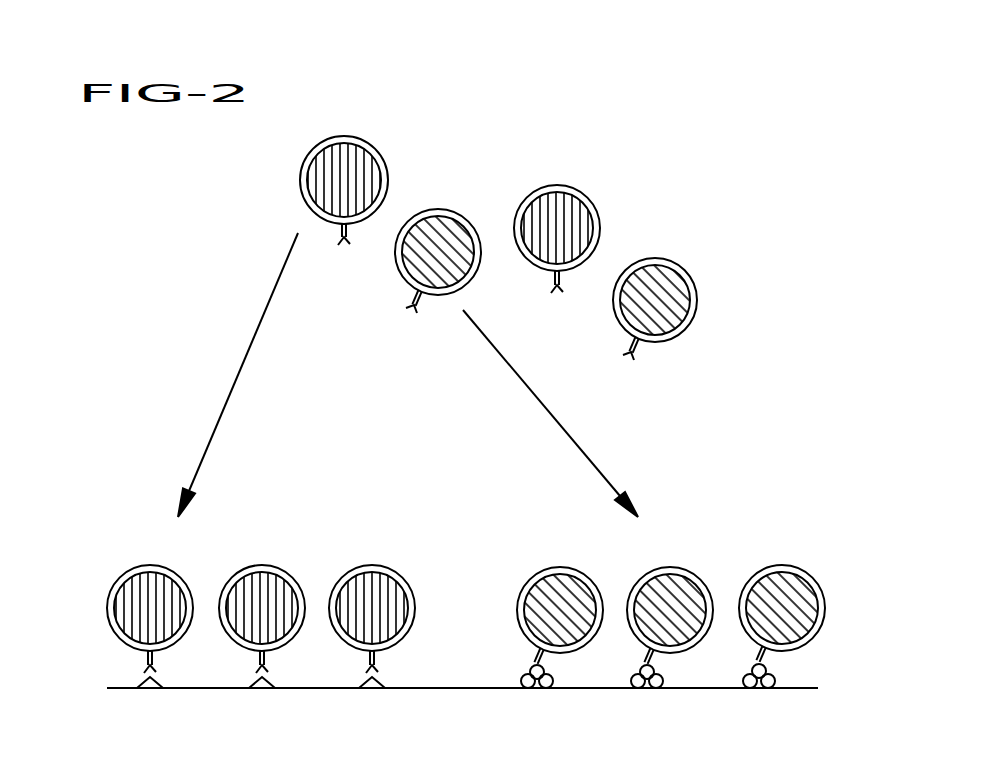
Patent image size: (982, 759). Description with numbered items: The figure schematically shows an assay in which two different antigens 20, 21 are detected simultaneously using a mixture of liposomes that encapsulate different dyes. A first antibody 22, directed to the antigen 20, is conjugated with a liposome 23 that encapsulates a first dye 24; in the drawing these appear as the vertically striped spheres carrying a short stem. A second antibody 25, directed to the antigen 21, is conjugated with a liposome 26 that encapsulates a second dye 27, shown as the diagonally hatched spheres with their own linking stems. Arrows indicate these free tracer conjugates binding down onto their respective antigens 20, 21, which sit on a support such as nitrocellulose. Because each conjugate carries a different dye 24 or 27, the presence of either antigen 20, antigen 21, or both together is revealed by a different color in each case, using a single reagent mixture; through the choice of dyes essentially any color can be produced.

The first antigen 20 is at (163, 688).
The second antigen 21 is at (552, 688).
The first antibody 22 is at (340, 241).
The liposome 23 is at (352, 137).
The first dye 24 is at (326, 176).
The second antibody 25 is at (414, 308).
The liposome 26 is at (427, 210).
The second dye 27 is at (450, 228).